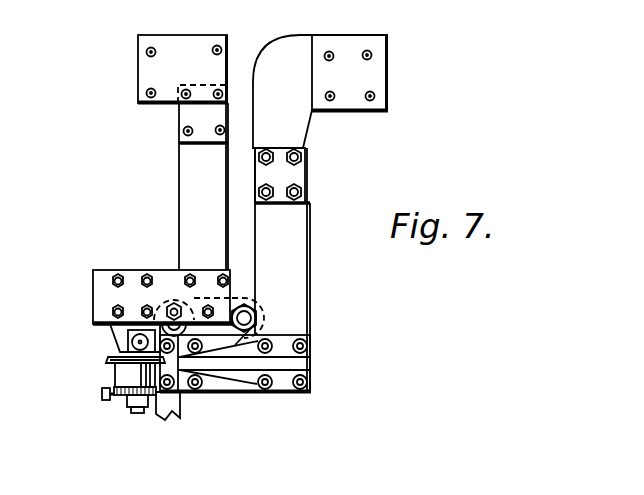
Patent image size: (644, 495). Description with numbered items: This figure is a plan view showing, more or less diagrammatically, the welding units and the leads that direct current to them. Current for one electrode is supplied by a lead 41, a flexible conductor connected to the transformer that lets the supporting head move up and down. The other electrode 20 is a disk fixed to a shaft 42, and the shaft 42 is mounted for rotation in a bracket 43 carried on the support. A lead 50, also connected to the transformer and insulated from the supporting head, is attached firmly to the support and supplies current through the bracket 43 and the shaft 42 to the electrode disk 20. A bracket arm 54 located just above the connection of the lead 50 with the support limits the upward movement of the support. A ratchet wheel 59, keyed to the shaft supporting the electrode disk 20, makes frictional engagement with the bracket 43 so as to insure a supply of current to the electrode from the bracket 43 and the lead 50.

The lead 41 is at (183, 207).
The electrode 20 is at (112, 360).
The bracket 43 is at (130, 375).
The ratchet wheel 59 is at (104, 396).
The shaft 42 is at (136, 410).
The bracket arm 54 is at (231, 362).
The lead 50 is at (247, 389).